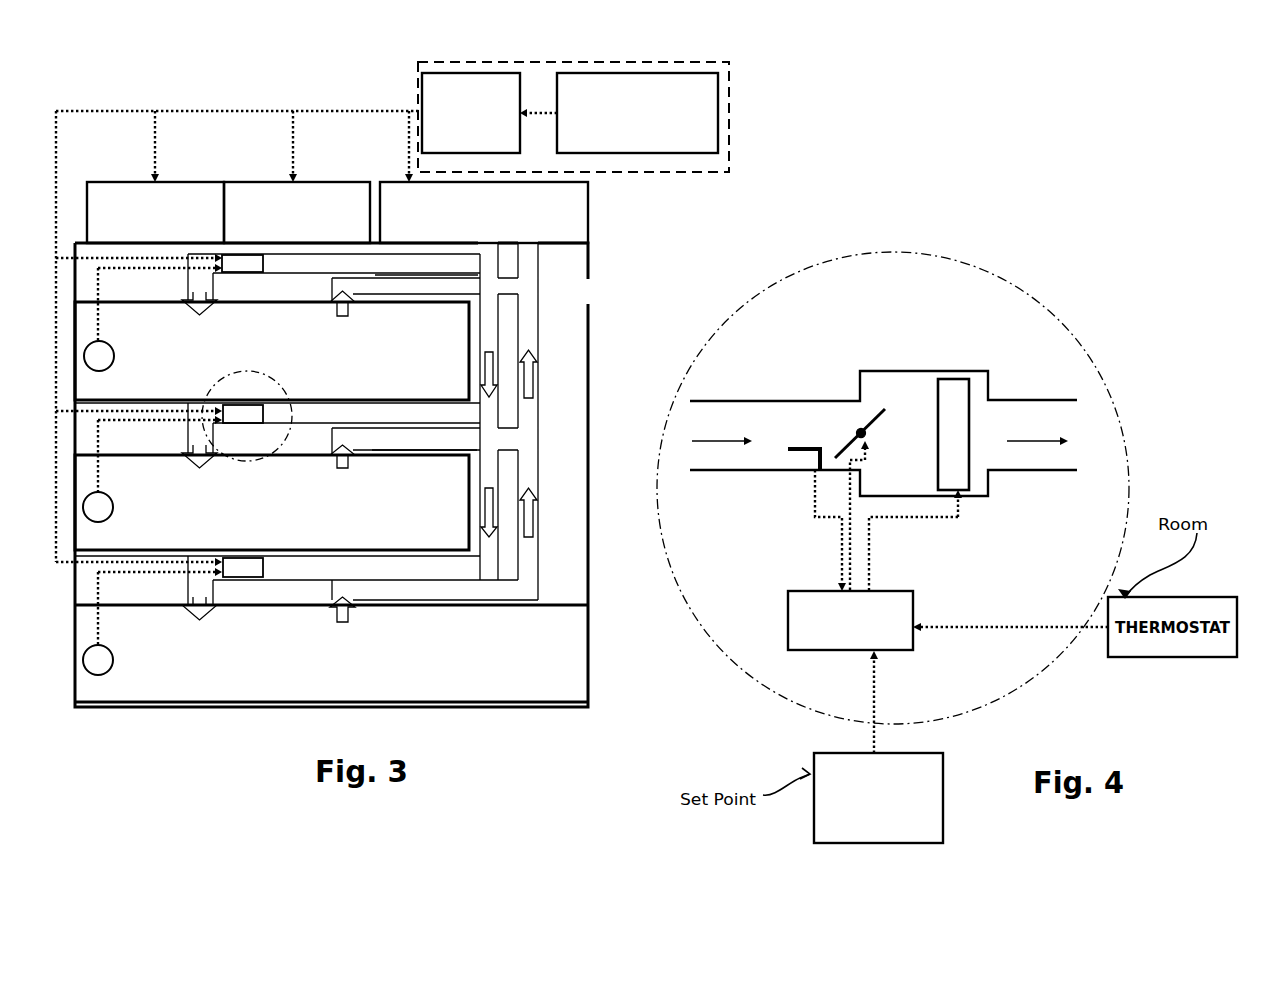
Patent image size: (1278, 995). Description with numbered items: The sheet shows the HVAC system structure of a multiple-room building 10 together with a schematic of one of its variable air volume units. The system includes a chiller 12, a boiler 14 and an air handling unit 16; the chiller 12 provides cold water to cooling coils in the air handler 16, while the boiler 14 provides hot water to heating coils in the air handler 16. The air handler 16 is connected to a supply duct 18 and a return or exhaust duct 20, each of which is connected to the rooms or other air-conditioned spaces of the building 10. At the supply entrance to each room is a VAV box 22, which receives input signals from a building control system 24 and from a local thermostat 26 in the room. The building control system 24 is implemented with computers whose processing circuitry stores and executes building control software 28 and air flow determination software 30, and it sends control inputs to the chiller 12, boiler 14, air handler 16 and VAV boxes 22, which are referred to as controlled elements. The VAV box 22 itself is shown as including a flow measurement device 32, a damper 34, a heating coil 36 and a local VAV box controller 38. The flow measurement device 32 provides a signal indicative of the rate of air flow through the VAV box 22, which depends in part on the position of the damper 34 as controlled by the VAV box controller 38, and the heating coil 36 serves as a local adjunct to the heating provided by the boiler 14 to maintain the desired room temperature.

In FIG. 3, the multiple-room building 10 is at (232, 72).
In FIG. 3, the chiller 12 is at (177, 238).
In FIG. 3, the boiler 14 is at (315, 238).
In FIG. 3, the air handling unit 16 is at (507, 236).
In FIG. 3, the supply duct 18 is at (483, 350).
In FIG. 3, the return duct 20 is at (536, 325).
In FIG. 3, the variable air volume box 22 is at (268, 408).
In FIG. 4, the variable air volume box 22 is at (1100, 312).
In FIG. 3, the building control system 24 is at (731, 110).
In FIG. 4, the building control system 24 is at (930, 834).
In FIG. 3, the local thermostat 26 is at (106, 338).
In FIG. 3, the building control software 28 is at (458, 73).
In FIG. 3, the air flow determination software 30 is at (597, 73).
In FIG. 4, the flow measurement device 32 is at (797, 461).
In FIG. 4, the damper 34 is at (877, 396).
In FIG. 4, the heating coil 36 is at (951, 414).
In FIG. 4, the VAV box controller 38 is at (893, 604).